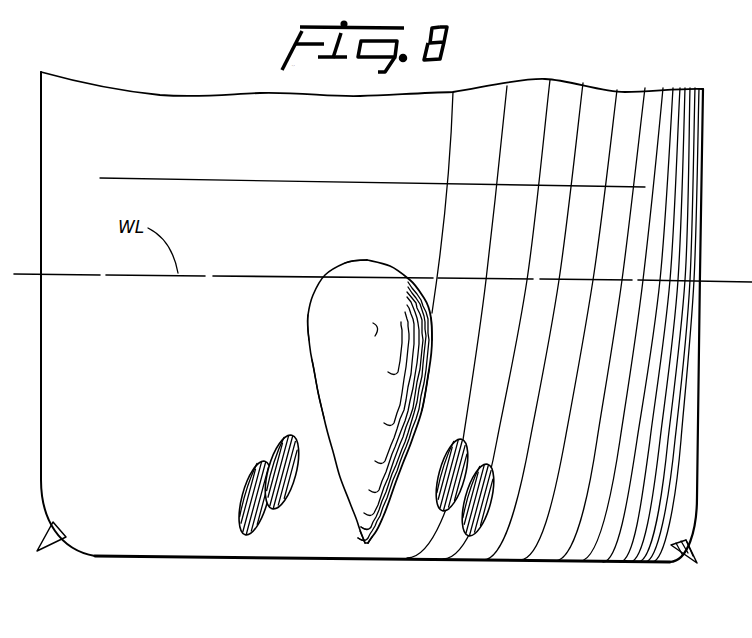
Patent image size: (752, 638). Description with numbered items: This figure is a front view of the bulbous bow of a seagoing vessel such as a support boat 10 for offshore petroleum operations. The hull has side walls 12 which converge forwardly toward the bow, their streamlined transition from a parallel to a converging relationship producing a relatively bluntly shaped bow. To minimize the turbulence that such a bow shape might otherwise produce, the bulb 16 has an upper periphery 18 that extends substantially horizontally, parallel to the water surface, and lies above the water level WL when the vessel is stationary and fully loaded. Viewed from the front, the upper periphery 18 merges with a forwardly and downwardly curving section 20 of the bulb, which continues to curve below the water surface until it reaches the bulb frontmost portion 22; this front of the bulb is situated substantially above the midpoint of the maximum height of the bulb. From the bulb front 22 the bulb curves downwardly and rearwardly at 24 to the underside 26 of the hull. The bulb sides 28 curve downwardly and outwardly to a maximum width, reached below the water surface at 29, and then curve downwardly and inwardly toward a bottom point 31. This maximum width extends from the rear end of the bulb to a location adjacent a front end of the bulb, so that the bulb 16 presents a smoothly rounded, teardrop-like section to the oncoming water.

The support boat 10 is at (625, 81).
The side walls 12 is at (183, 103).
The bulb 16 is at (334, 274).
The upper periphery 18 is at (356, 259).
The forwardly and downwardly curving section 20 is at (372, 307).
The bulb frontmost portion 22 is at (370, 365).
The downwardly and rearwardly curving portion 24 is at (370, 446).
The underside of the hull 26 is at (395, 563).
The bulb sides 28 is at (317, 400).
The maximum width location 29 is at (306, 315).
The bottom point 31 is at (365, 546).